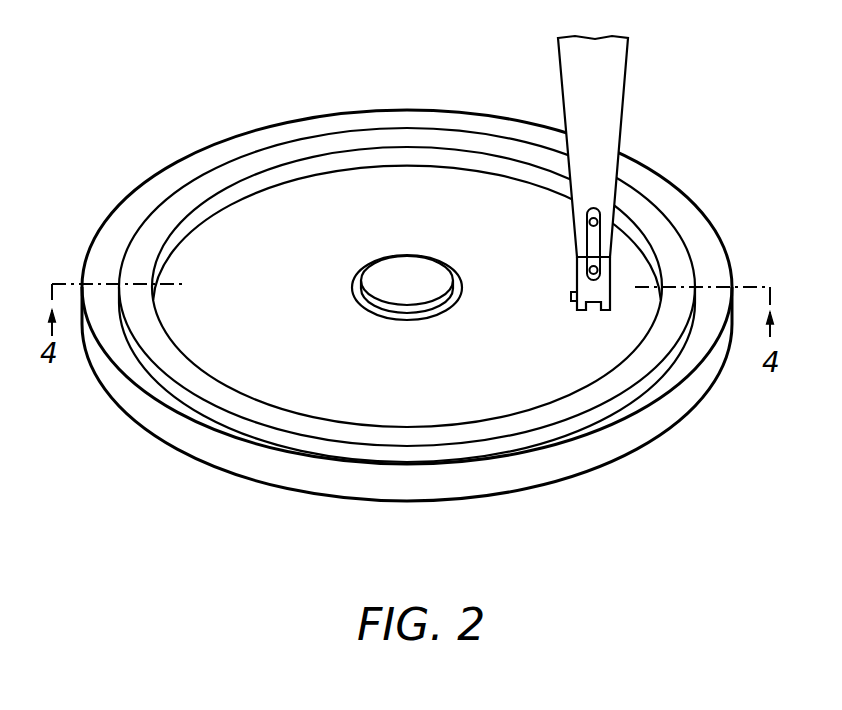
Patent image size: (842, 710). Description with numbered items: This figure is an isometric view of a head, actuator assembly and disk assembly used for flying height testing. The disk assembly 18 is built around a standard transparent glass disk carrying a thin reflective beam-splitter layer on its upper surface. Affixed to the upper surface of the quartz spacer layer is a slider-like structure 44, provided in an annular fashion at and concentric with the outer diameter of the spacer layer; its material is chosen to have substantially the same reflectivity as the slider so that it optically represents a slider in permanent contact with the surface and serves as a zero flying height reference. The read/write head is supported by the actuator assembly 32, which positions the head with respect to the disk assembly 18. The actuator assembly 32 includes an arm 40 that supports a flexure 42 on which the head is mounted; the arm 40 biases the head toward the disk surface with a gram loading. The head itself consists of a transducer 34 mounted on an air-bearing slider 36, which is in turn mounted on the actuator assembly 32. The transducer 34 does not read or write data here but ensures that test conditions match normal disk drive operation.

The disk assembly 18 is at (128, 184).
The slider-like structure 44 is at (278, 158).
The actuator assembly 32 is at (616, 192).
The arm 40 is at (628, 113).
The flexure 42 is at (592, 236).
The air-bearing slider 36 is at (577, 261).
The transducer 34 is at (571, 298).